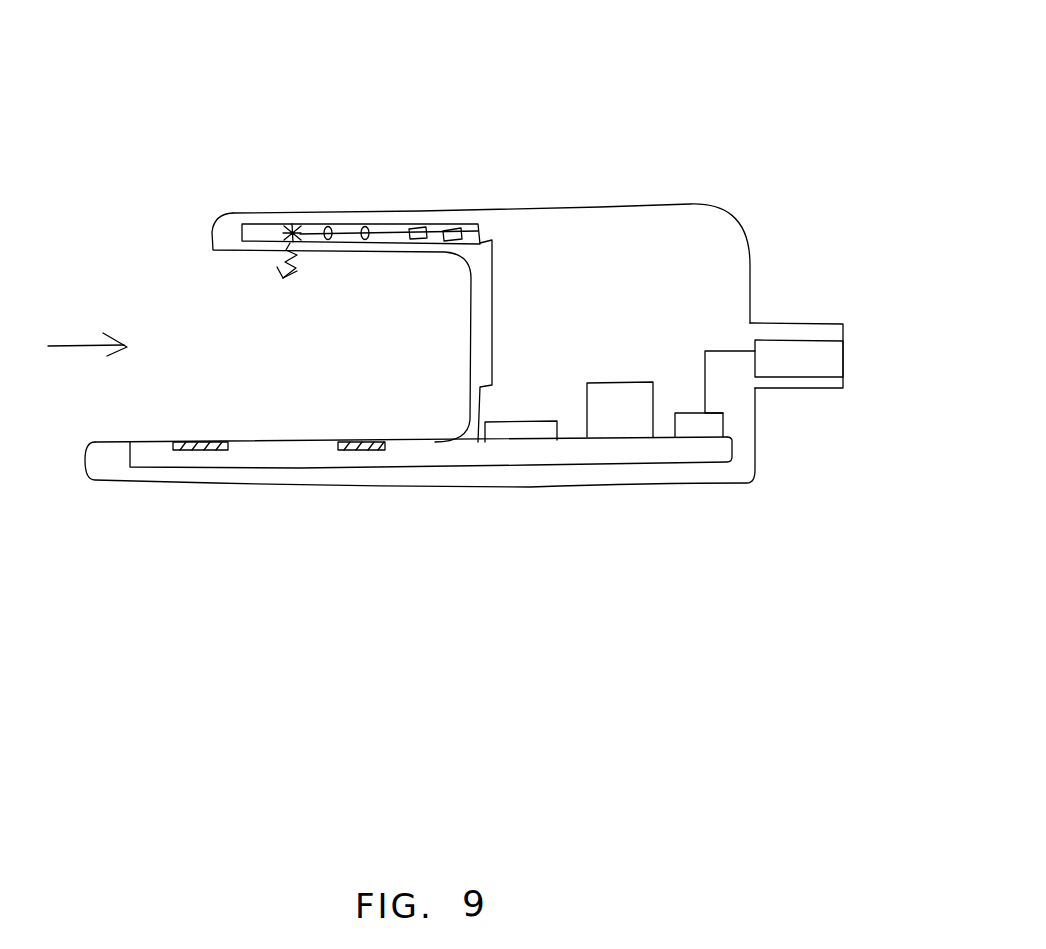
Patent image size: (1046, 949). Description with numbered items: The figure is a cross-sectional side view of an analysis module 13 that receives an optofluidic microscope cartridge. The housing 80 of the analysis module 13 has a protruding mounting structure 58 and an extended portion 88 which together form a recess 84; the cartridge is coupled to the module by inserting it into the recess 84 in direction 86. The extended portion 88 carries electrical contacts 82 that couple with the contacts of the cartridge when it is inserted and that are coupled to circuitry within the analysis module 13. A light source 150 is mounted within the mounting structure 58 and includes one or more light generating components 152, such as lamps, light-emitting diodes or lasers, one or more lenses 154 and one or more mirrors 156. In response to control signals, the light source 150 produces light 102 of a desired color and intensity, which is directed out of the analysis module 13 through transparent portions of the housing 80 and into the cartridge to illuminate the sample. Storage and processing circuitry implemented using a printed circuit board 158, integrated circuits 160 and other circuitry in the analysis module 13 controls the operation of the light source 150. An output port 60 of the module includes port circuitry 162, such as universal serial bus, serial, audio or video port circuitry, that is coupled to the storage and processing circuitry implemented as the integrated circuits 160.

The analysis module 13 is at (590, 78).
The mounting structure 58 is at (232, 216).
The output port 60 is at (807, 327).
The housing 80 is at (697, 204).
The electrical contacts 82 is at (205, 442).
The recess 84 is at (363, 355).
The direction 86 is at (73, 342).
The extended portion 88 is at (182, 477).
The light 102 is at (296, 262).
The light source 150 is at (258, 222).
The light generating components 152 is at (433, 223).
The lenses 154 is at (343, 226).
The mirrors 156 is at (286, 228).
The printed circuit board 158 is at (715, 457).
The integrated circuits 160 is at (523, 422).
The port circuitry 162 is at (815, 372).